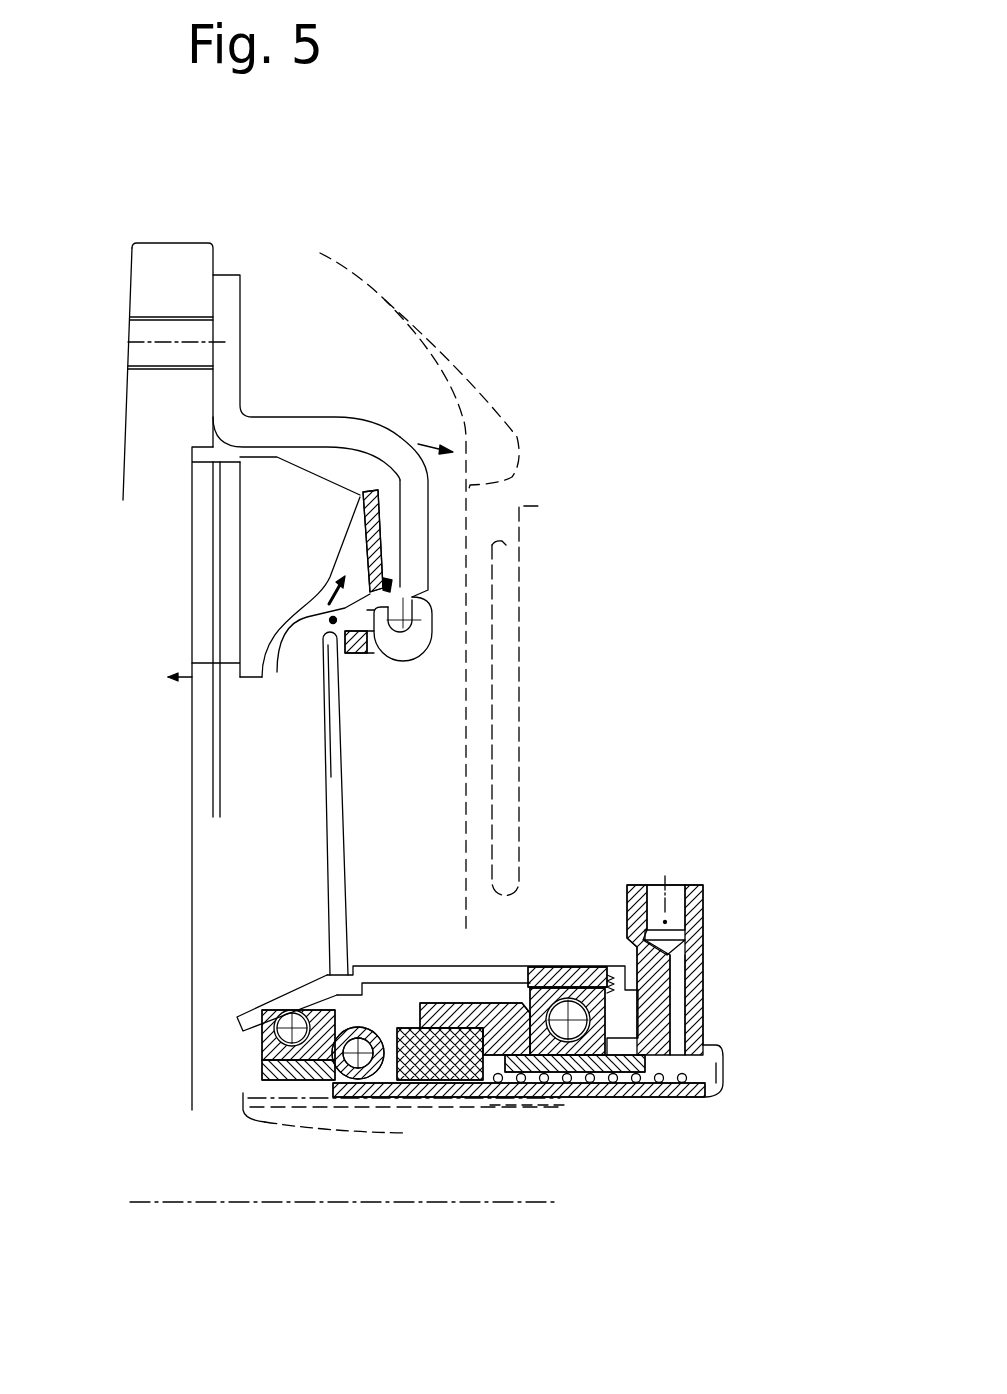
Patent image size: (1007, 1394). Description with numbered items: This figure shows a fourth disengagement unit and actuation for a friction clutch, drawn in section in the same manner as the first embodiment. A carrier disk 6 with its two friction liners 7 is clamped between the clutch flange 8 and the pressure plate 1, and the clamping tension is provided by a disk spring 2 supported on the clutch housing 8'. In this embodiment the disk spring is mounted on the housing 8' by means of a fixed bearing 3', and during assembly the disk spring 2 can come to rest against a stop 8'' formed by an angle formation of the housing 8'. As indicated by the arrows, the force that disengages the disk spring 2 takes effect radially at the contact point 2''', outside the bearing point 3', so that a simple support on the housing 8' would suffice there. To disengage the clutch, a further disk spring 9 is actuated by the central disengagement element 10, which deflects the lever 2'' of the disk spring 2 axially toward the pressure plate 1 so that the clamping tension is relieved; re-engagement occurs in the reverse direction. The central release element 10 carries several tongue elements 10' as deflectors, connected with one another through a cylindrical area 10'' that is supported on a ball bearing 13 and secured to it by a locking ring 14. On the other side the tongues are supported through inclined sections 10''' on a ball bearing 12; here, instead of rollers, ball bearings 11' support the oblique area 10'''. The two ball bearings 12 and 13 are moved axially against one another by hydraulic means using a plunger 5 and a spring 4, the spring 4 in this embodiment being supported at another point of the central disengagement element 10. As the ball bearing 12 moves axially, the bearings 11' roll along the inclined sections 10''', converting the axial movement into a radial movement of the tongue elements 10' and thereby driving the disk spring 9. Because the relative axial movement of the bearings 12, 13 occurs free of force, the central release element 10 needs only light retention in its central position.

The pressure plate 1 is at (267, 540).
The disk spring 2 is at (418, 514).
The lever of disk spring 2'' is at (206, 652).
The contact point 2''' is at (508, 534).
The fixed bearing 3' is at (504, 591).
The spring 4 is at (653, 1080).
The plunger 5 is at (410, 1080).
The carrier disk 6 is at (222, 597).
The friction liners 7 is at (258, 660).
The clutch flange 8 is at (256, 371).
The clutch housing 8' is at (448, 449).
The stop 8'' is at (485, 657).
The disk spring 9 is at (345, 862).
The central disengagement element 10 is at (445, 1135).
The tongue elements 10' is at (506, 879).
The cylindrical area 10'' is at (655, 924).
The inclined sections 10''' is at (209, 993).
The ball bearings 11' is at (201, 1047).
The ball bearing 12 is at (373, 1075).
The ball bearing 13 is at (563, 970).
The locking ring 14 is at (637, 993).